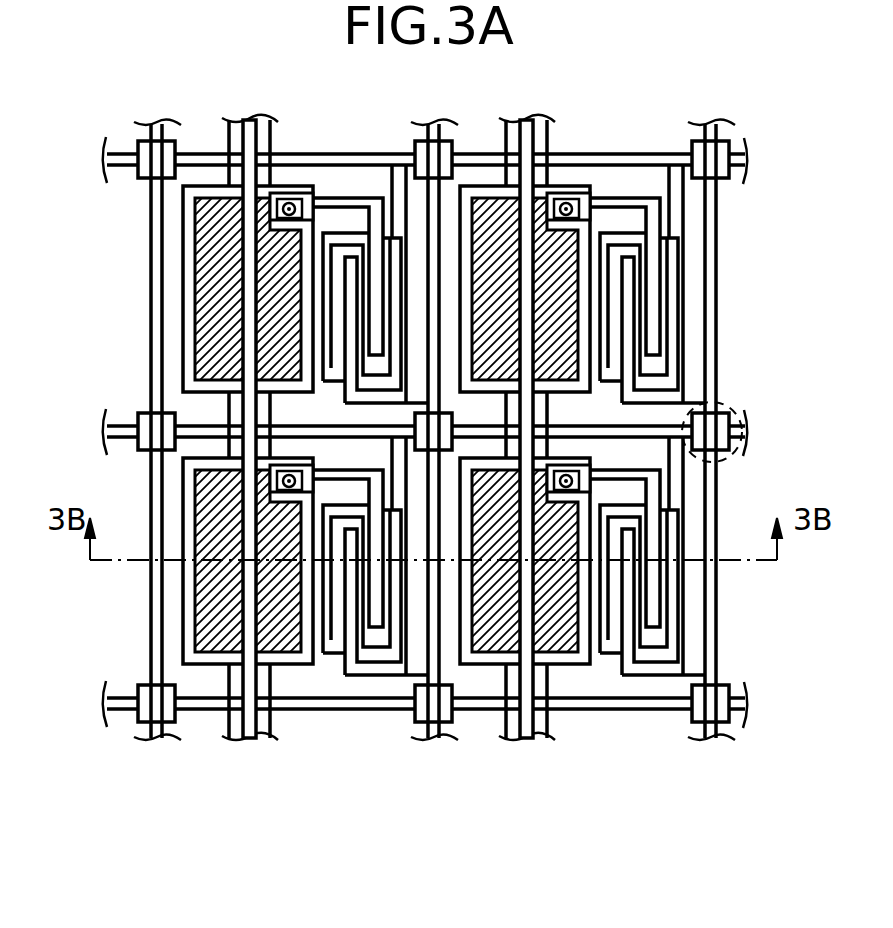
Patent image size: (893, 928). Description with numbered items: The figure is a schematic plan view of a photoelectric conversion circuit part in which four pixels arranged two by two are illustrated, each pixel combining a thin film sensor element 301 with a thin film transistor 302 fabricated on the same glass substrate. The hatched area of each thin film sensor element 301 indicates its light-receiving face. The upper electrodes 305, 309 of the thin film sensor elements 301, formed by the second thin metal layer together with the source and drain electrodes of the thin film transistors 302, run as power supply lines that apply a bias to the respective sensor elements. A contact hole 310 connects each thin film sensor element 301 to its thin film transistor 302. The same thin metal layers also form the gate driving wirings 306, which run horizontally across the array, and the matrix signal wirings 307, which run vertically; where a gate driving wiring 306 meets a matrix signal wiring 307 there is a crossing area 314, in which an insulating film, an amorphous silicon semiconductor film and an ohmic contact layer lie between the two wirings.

The thin film sensor element 301 is at (205, 322).
The thin film transistor 302 is at (640, 298).
The upper electrode 305 is at (530, 633).
The gate driving wiring 306 is at (637, 114).
The matrix signal wiring 307 is at (802, 249).
The upper electrode 309 is at (248, 240).
The contact hole 310 is at (292, 196).
The crossing area 314 is at (736, 414).